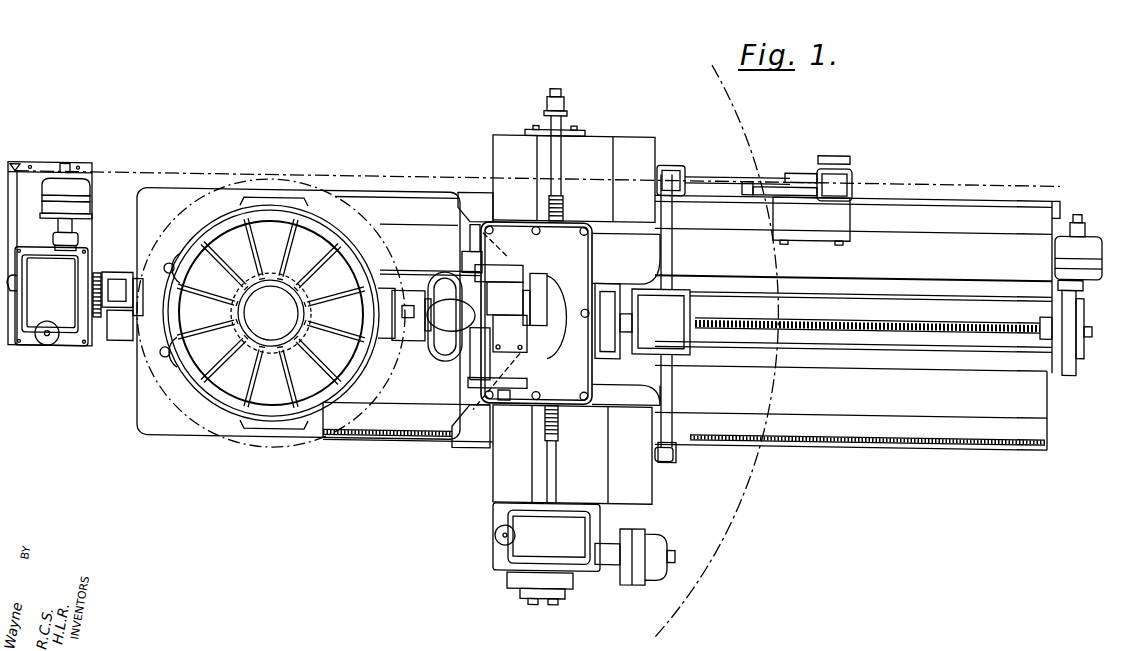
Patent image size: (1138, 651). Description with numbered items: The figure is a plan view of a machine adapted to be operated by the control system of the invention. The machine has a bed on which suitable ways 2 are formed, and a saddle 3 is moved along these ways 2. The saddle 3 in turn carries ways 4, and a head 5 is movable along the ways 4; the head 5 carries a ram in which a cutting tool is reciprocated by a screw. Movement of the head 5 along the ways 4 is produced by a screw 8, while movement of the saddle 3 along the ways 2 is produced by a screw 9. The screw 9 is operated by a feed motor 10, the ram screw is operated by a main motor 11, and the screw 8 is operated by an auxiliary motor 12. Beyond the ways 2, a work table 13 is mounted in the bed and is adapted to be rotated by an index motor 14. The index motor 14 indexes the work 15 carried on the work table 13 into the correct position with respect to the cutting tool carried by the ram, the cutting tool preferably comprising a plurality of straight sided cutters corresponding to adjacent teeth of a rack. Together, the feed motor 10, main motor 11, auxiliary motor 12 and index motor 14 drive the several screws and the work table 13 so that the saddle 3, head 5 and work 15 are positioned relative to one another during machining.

The ways 2 is at (900, 211).
The saddle 3 is at (468, 199).
The ways 4 is at (507, 140).
The head 5 is at (616, 260).
The screw 8 is at (557, 174).
The screw 9 is at (905, 318).
The feed motor 10 is at (1085, 234).
The main motor 11 is at (690, 295).
The auxiliary motor 12 is at (650, 573).
The work table 13 is at (270, 223).
The index motor 14 is at (75, 191).
The work 15 is at (320, 202).